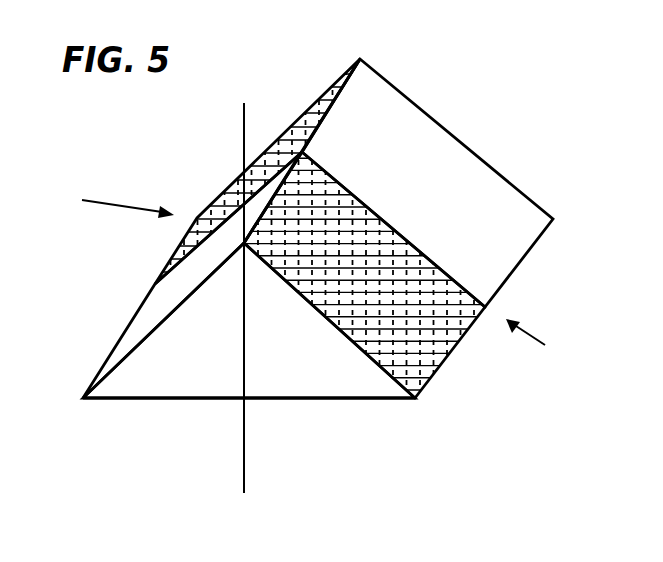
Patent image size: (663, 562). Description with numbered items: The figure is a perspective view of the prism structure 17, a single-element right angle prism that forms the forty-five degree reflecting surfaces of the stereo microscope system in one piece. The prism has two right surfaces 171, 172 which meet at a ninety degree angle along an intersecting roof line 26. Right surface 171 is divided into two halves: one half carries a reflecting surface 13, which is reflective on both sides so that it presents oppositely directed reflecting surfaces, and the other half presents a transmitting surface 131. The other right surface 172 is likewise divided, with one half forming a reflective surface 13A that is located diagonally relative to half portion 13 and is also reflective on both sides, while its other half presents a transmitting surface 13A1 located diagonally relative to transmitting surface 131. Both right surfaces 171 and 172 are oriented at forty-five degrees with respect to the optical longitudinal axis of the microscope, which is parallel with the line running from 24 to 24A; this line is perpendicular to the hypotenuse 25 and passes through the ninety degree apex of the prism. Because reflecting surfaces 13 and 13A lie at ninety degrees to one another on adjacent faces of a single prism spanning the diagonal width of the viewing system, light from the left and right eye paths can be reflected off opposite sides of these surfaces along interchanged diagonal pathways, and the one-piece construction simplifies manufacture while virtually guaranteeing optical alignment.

The reflecting surface 13 is at (227, 195).
The transmitting surface 131 is at (180, 287).
The reflective surface 13A is at (440, 290).
The transmitting surface 13A1 is at (453, 182).
The prism structure 17 is at (208, 379).
The right surface 171 is at (103, 199).
The right surface 172 is at (548, 345).
The line 24-24A end point 24 is at (239, 282).
The line 24-24A end point 24A is at (246, 464).
The hypotenuse 25 is at (332, 410).
The roof line 26 is at (256, 224).